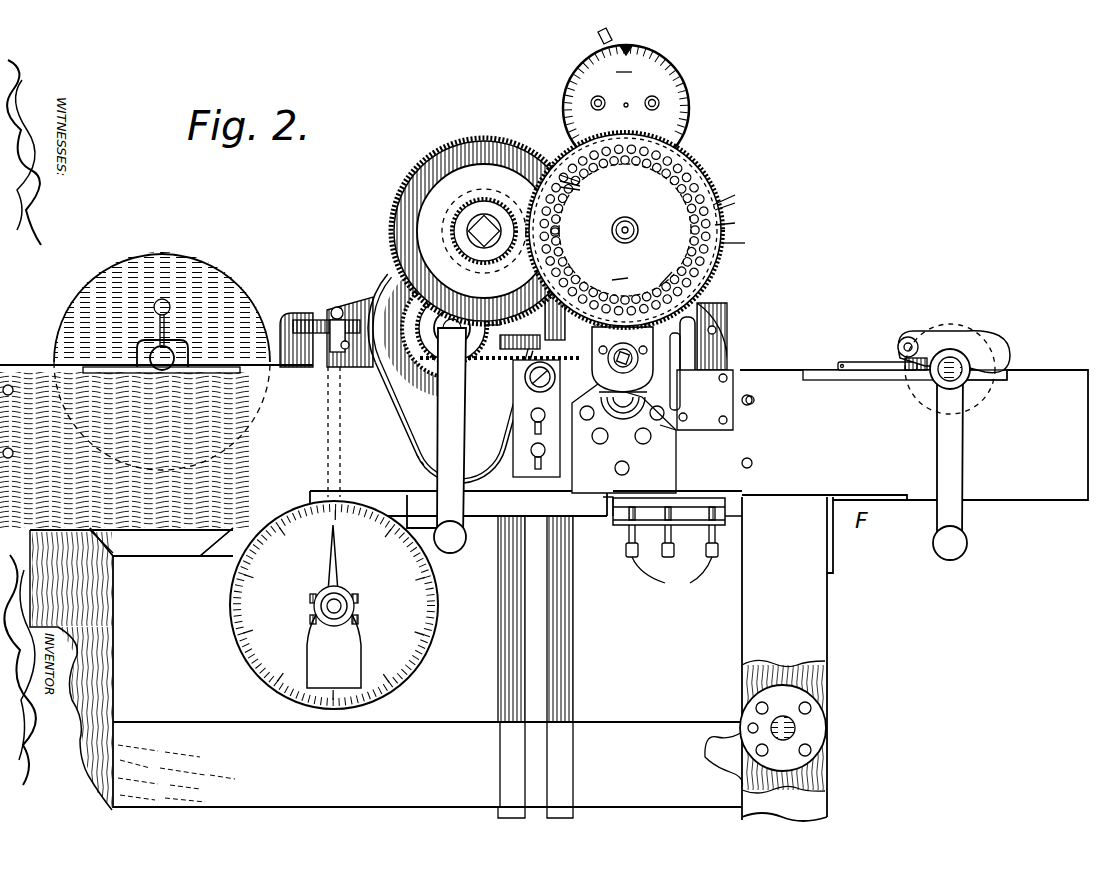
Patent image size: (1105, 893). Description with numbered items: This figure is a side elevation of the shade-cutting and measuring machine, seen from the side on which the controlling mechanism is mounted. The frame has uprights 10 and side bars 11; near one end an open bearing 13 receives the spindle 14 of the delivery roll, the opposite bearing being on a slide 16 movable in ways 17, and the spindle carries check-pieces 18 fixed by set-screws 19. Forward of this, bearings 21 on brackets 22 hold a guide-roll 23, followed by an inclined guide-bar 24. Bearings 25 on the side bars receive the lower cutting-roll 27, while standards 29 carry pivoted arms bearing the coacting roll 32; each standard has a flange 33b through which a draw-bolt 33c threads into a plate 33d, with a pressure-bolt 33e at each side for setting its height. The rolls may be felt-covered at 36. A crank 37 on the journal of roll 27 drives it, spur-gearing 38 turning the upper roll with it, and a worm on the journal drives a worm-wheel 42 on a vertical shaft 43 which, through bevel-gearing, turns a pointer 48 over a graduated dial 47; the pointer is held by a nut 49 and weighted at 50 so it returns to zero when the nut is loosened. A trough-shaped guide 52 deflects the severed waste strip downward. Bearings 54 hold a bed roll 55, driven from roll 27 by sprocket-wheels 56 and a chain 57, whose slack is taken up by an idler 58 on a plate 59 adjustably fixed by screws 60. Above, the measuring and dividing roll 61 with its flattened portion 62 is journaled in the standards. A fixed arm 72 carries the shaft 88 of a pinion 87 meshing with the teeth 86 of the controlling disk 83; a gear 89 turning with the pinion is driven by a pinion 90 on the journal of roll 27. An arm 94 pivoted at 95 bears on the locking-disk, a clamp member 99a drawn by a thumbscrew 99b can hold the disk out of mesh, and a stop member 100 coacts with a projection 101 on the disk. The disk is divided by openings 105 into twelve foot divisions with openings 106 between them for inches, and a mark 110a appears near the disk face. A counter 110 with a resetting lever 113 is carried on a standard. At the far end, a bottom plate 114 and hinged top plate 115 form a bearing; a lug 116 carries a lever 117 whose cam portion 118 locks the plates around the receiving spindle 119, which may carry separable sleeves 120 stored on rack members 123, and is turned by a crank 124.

The uprights 10 is at (113, 660).
The side bars 11 is at (914, 435).
The open bearing 13 is at (188, 356).
The spindle 14 is at (170, 350).
The slide 16 is at (177, 543).
The ways 17 is at (122, 560).
The check-pieces 18 is at (162, 361).
The set-screws 19 is at (154, 308).
The bearings 21 is at (296, 318).
The brackets 22 is at (288, 368).
The guide-roll 23 is at (284, 322).
The guide-bar 24 is at (350, 300).
The bearings 25 is at (347, 352).
The roll 27 is at (398, 437).
The standards 29 is at (720, 312).
The coacting roll 32 is at (392, 210).
The flange 33b is at (725, 513).
The draw-bolt 33c is at (672, 547).
The plate 33d is at (712, 491).
The pressure-bolt 33e is at (672, 578).
The felt covering 36 is at (521, 317).
The crank 37 is at (440, 530).
The spur-gearing 38 is at (398, 236).
The worm-wheel 42 is at (332, 316).
The vertical shaft 43 is at (328, 372).
The dial 47 is at (408, 680).
The pointer 48 is at (340, 556).
The nut 49 is at (320, 606).
The weight 50 is at (334, 644).
The trough-shaped guide 52 is at (560, 625).
The bearing 54 is at (720, 340).
The bed roll 55 is at (560, 355).
The sprocket-wheels 56 is at (594, 374).
The chain 57 is at (524, 377).
The idler 58 is at (518, 393).
The plate 59 is at (598, 438).
The screws 60 is at (534, 447).
The measuring and dividing roll 61 is at (746, 242).
The flattened peripheral portion 62 is at (638, 236).
The arm 72 is at (388, 280).
The controlling member or disk 83 is at (625, 230).
The teeth 86 is at (741, 220).
The pinion 87 is at (492, 200).
The shaft 88 is at (467, 231).
The gear 89 is at (478, 160).
The pinion 90 is at (415, 345).
The arm 94 is at (697, 357).
The pivot 95 is at (700, 400).
The clamp member 99a is at (662, 426).
The thumbscrew 99b is at (676, 395).
The stop member 100 is at (677, 270).
The projection 101 is at (618, 308).
The openings 105 is at (672, 160).
The openings 106 is at (582, 185).
The counter 110 is at (686, 80).
The mark 110a is at (618, 271).
The lever 113 is at (609, 38).
The bottom plate 114 is at (866, 380).
The top plate 115 is at (870, 362).
The lug 116 is at (902, 350).
The lever 117 is at (955, 338).
The cam portion 118 is at (913, 338).
The spindle 119 is at (958, 375).
The separable sleeves 120 is at (1000, 370).
The rack members 123 is at (805, 727).
The crank 124 is at (962, 518).